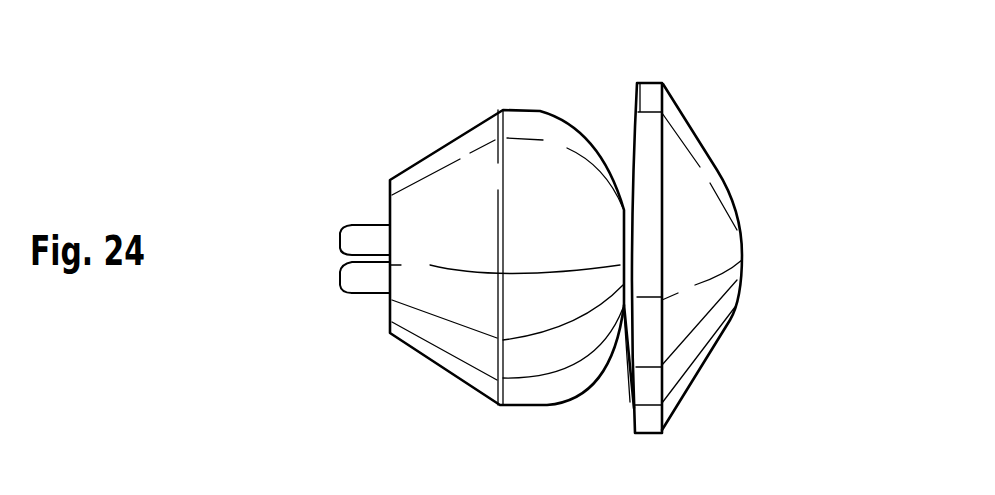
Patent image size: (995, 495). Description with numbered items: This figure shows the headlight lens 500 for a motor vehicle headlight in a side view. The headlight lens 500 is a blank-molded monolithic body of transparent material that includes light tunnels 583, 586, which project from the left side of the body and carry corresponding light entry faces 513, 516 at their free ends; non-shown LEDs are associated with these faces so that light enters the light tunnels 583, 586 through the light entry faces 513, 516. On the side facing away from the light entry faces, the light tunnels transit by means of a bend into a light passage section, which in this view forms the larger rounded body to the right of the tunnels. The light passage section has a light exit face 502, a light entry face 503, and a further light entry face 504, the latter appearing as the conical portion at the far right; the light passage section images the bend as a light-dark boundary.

The headlight lens 500 is at (449, 85).
The light exit face 502 is at (587, 378).
The light entry face 503 is at (632, 137).
The further light entry face 504 is at (693, 137).
The light entry face 513 is at (340, 237).
The light entry face 516 is at (340, 270).
The light tunnel 583 is at (365, 237).
The light tunnel 586 is at (367, 277).